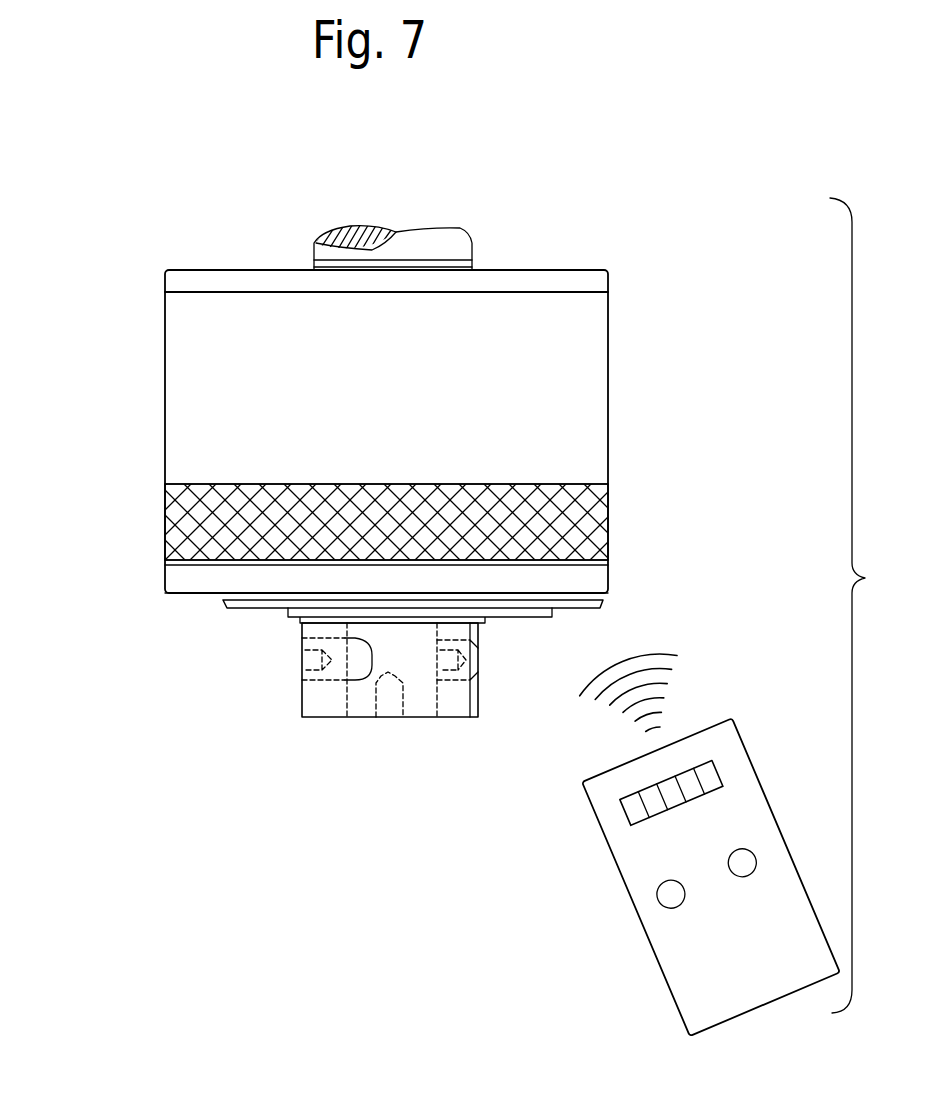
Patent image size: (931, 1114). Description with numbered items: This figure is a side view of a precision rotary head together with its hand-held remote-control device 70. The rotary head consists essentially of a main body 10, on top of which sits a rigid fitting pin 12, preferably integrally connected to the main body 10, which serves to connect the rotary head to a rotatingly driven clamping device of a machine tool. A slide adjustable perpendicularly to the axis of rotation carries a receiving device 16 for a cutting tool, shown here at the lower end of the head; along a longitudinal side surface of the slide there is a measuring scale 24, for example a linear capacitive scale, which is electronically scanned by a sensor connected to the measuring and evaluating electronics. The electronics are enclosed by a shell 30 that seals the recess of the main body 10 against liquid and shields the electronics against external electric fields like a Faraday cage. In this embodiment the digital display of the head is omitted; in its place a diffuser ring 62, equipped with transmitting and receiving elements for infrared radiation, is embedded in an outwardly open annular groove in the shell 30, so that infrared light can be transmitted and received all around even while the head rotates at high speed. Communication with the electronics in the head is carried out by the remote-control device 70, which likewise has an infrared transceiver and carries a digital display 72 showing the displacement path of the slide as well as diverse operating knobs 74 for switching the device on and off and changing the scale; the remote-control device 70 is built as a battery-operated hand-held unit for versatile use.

The main body 10 is at (577, 288).
The rigid fitting pin 12 is at (443, 247).
The shell 30 is at (572, 352).
The diffuser ring 62 is at (178, 520).
The measuring scale 24 is at (218, 579).
The receiving device 16 is at (462, 723).
The remote-control device 70 is at (693, 826).
The digital display 72 is at (710, 777).
The operating knobs 74 is at (676, 886).